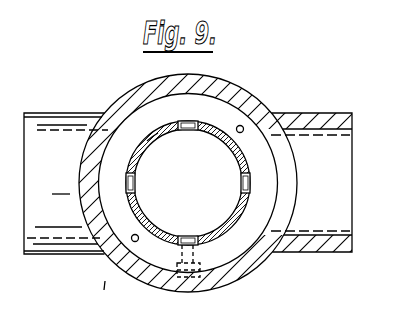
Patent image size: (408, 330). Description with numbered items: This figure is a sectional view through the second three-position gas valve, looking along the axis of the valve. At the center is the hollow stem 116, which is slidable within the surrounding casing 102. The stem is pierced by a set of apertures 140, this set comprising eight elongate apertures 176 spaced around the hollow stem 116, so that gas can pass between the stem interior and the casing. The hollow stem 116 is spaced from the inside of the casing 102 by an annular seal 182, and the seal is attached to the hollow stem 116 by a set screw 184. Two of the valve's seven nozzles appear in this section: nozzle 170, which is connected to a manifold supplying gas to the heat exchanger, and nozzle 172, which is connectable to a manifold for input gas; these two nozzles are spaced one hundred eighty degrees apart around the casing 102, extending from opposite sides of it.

The casing 102 is at (236, 94).
The hollow stem 116 is at (163, 127).
The set of apertures 140 is at (233, 224).
The nozzle 170 is at (70, 243).
The nozzle 172 is at (331, 120).
The elongate aperture 176 is at (144, 144).
The annular seal 182 is at (163, 260).
The set screw 184 is at (193, 283).